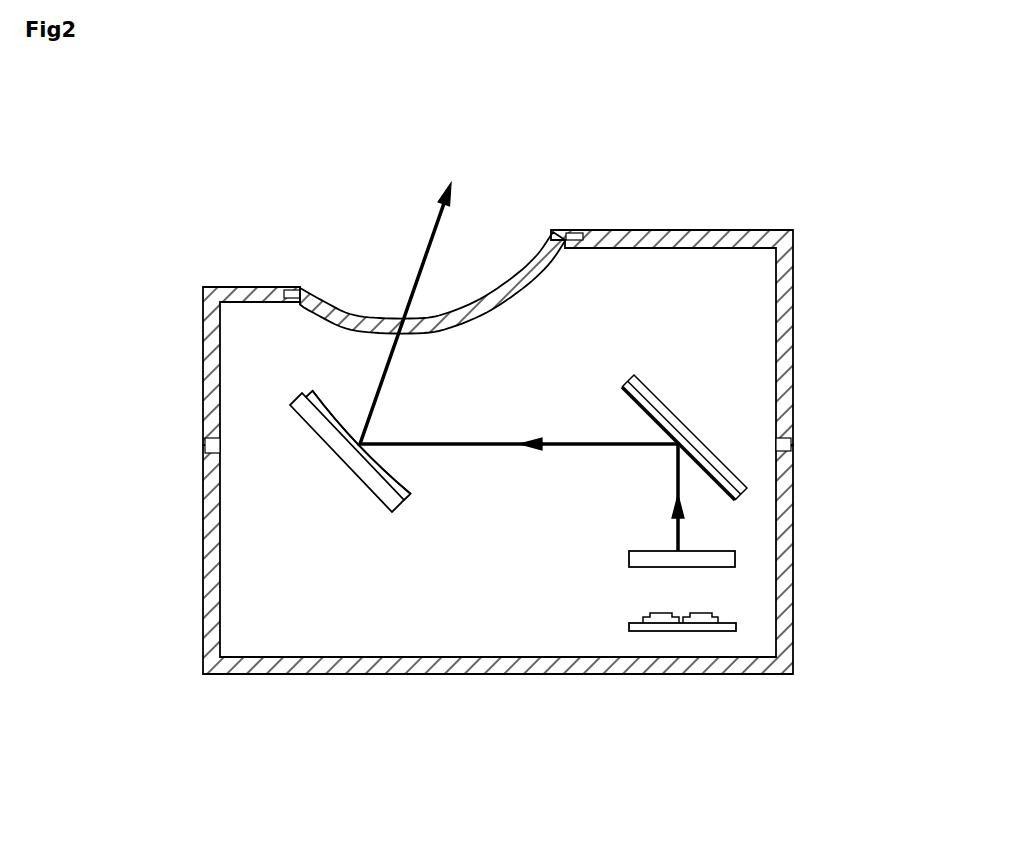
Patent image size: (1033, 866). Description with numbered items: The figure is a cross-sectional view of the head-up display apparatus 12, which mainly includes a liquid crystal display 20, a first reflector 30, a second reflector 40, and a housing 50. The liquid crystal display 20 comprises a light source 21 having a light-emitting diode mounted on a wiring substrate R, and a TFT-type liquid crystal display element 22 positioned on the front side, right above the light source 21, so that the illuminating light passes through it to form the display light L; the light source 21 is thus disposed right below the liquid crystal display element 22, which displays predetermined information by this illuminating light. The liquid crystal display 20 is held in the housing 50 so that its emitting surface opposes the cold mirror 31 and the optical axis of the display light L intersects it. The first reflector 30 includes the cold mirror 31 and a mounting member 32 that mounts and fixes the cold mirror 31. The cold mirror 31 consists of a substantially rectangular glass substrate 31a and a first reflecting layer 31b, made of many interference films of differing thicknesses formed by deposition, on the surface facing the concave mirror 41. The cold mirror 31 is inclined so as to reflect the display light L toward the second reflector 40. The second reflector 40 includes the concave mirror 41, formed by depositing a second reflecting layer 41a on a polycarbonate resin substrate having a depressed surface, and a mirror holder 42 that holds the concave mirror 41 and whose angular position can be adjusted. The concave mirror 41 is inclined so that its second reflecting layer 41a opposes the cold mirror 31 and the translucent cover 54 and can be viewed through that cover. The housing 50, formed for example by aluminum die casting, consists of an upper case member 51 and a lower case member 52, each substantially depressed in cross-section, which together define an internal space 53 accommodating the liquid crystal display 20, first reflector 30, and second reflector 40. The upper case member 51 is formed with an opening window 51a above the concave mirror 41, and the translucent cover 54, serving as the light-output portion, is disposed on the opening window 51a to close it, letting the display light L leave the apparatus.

The display apparatus 12 is at (246, 190).
The liquid crystal display 20 is at (741, 623).
The light source 21 is at (703, 613).
The liquid crystal display element 22 is at (723, 560).
The first reflector 30 is at (743, 418).
The cold mirror 31 is at (743, 418).
The glass substrate 31a is at (682, 430).
The first reflecting layer 31b is at (698, 473).
The mounting member 32 is at (720, 458).
The second reflector 40 is at (351, 445).
The concave mirror 41 is at (381, 440).
The second reflecting layer 41a is at (326, 404).
The mirror holder 42 is at (369, 483).
The housing 50 is at (498, 451).
The upper case member 51 is at (498, 297).
The opening window 51a is at (561, 250).
The lower case member 52 is at (502, 666).
The space 53 is at (348, 623).
The translucent cover 54 is at (331, 309).
The display light L is at (471, 440).
The wiring substrate R is at (683, 628).